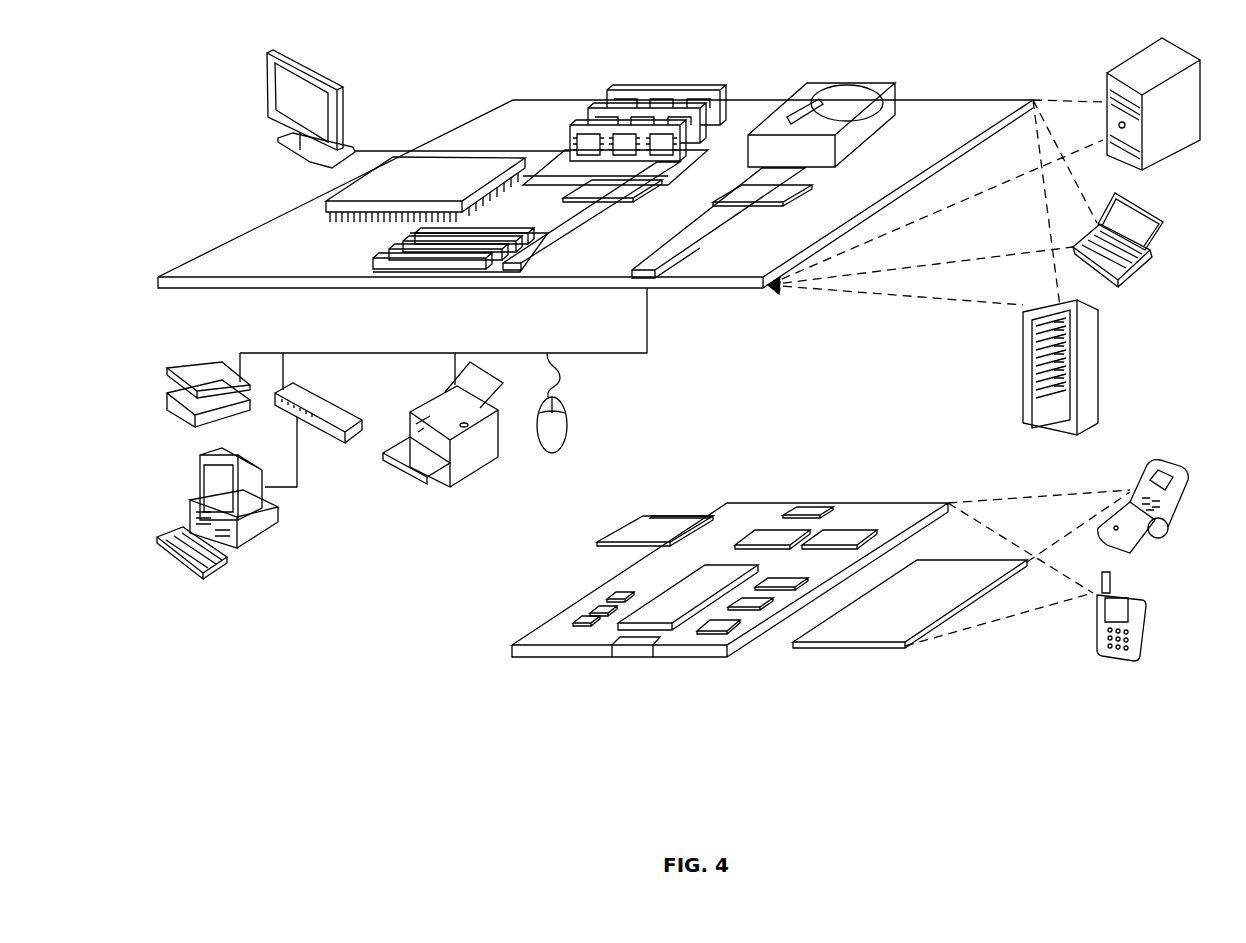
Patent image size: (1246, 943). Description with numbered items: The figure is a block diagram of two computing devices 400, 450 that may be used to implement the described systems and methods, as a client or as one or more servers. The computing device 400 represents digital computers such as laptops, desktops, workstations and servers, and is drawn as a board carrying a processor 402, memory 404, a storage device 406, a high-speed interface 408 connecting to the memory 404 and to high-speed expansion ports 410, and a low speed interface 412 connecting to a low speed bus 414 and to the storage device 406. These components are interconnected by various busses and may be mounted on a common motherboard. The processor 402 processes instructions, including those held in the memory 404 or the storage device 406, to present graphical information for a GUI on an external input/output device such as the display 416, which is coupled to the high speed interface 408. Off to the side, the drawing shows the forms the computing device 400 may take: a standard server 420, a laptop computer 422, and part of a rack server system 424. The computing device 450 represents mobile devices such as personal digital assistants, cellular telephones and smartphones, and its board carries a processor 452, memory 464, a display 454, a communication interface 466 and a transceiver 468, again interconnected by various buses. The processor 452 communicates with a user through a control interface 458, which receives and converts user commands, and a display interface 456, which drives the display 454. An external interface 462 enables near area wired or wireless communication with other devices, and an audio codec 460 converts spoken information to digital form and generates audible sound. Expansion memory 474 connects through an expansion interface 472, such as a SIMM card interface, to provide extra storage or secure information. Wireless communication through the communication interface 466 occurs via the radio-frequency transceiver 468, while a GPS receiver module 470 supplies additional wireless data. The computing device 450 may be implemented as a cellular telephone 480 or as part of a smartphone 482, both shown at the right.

The computing device 400 is at (442, 78).
The processor 402 is at (328, 202).
The memory 404 is at (616, 92).
The storage device 406 is at (832, 86).
The high-speed interface 408 is at (590, 190).
The high-speed expansion ports 410 is at (383, 254).
The low speed interface 412 is at (748, 188).
The low speed bus 414 is at (655, 278).
The display 416 is at (273, 55).
The standard server 420 is at (1107, 85).
The laptop computer 422 is at (1168, 212).
The rack server system 424 is at (1023, 390).
The computing device 450 is at (489, 651).
The processor 452 is at (667, 617).
The display 454 is at (875, 630).
The display interface 456 is at (727, 623).
The control interface 458 is at (750, 600).
The audio codec 460 is at (790, 585).
The external interface 462 is at (638, 648).
The memory 464 is at (580, 612).
The communication interface 466 is at (773, 537).
The transceiver 468 is at (840, 535).
The GPS receiver module 470 is at (815, 510).
The expansion interface 472 is at (713, 512).
The expansion memory 474 is at (640, 515).
The cellular telephone 480 is at (1147, 462).
The smartphone 482 is at (1095, 618).